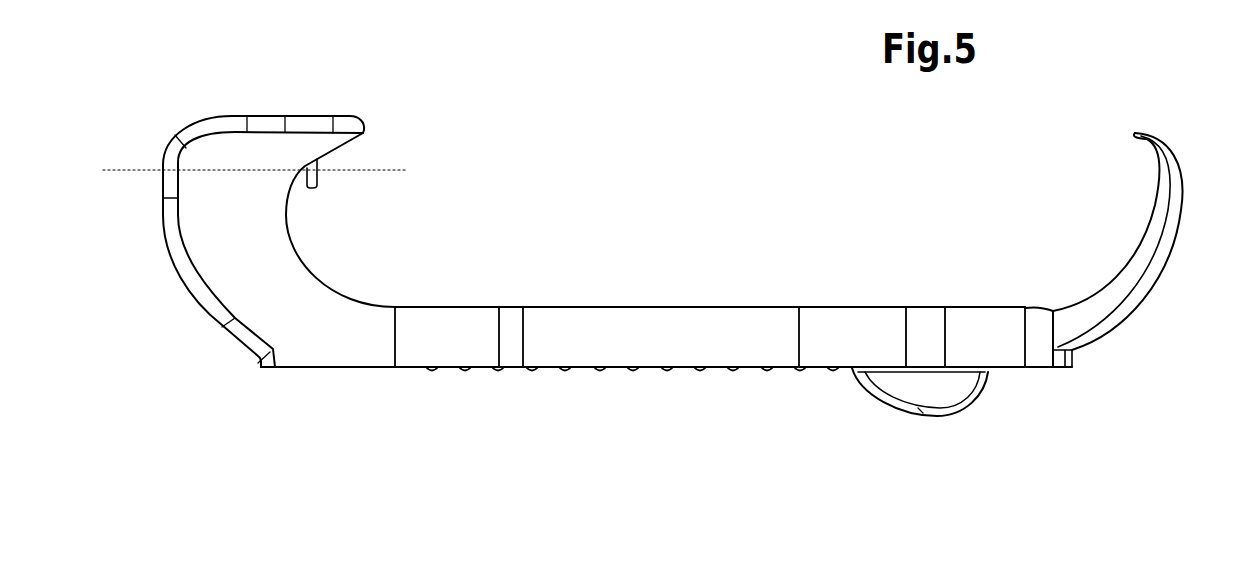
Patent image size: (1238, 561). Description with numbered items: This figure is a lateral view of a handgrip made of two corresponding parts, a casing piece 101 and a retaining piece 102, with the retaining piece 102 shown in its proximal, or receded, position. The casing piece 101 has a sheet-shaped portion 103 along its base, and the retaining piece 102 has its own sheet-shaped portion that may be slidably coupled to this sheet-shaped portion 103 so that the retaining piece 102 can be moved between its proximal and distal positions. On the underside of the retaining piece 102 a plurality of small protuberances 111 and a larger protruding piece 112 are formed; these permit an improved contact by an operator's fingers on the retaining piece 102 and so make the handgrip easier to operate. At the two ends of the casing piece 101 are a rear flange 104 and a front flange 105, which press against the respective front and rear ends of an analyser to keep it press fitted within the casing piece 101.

The casing piece 101 is at (645, 281).
The retaining piece 102 is at (646, 404).
The sheet-shaped portion 103 is at (565, 312).
The rear flange 104 is at (1153, 134).
The front flange 105 is at (260, 147).
The small protuberances 111 is at (502, 373).
The larger protruding piece 112 is at (940, 390).